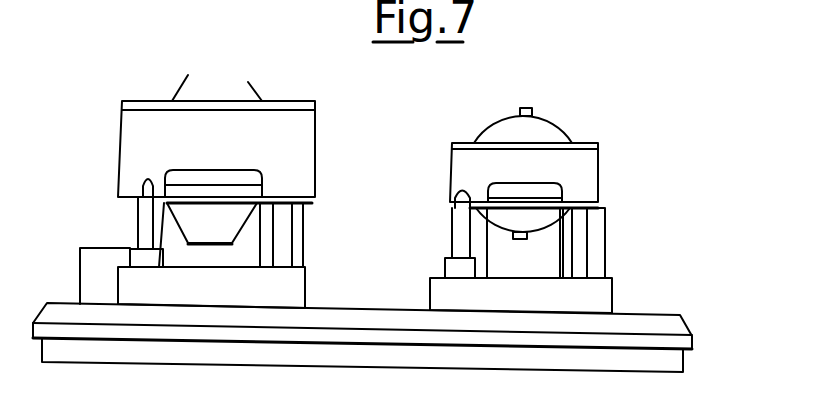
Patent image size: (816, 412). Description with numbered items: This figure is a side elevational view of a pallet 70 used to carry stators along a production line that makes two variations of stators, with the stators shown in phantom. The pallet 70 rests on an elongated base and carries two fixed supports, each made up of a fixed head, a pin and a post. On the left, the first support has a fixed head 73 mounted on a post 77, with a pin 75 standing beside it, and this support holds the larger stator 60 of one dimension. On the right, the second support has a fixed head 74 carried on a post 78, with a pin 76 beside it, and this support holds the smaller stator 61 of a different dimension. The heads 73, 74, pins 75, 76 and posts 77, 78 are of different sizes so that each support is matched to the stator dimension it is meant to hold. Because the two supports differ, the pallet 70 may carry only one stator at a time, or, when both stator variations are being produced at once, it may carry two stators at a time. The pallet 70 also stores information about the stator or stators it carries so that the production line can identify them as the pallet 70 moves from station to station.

The stator 60 is at (287, 128).
The stator 61 is at (582, 157).
The pallet 70 is at (660, 325).
The fixed head 73 is at (248, 233).
The fixed head 74 is at (502, 242).
The pin 75 is at (145, 217).
The pin 76 is at (458, 222).
The post 77 is at (288, 247).
The post 78 is at (593, 245).